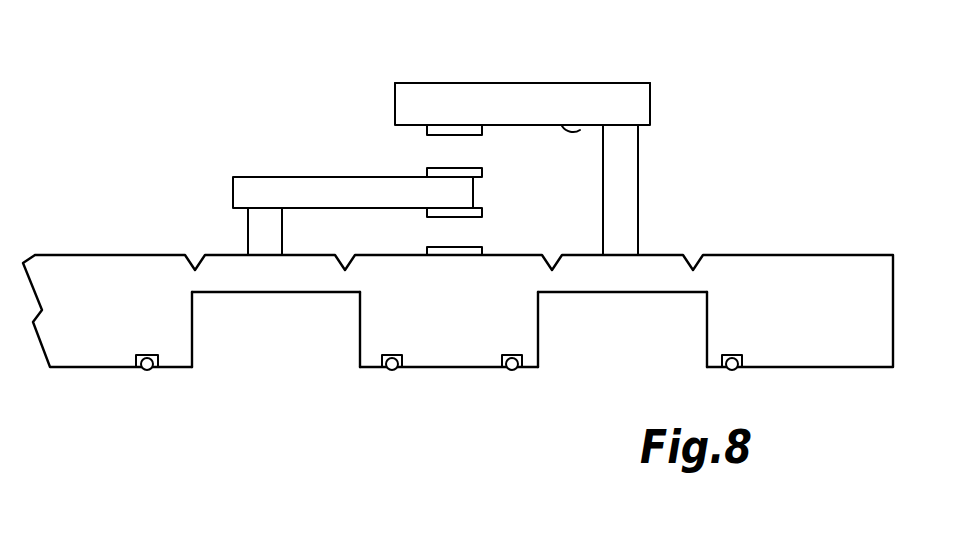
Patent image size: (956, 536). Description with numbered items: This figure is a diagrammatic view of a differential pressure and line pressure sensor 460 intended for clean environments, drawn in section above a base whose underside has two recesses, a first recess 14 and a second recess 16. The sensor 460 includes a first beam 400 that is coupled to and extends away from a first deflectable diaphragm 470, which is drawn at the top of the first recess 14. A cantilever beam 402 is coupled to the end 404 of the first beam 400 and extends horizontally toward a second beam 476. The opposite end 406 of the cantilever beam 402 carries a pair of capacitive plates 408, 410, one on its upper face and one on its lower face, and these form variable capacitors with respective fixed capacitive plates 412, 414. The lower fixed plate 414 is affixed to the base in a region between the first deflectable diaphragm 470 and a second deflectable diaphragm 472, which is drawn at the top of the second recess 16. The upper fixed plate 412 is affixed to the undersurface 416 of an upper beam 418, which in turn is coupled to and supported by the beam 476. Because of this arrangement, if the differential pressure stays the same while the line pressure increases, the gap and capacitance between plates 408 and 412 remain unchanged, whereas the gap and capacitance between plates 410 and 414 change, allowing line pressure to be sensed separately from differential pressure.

The first beam 400 is at (248, 247).
The cantilever beam 402 is at (377, 177).
The end of beam 404 is at (270, 208).
The opposite end of beam 406 is at (480, 195).
The capacitive plate 408 is at (482, 172).
The capacitive plate 410 is at (482, 214).
The capacitive plate 412 is at (482, 130).
The capacitive plate 414 is at (482, 253).
The undersurface 416 is at (558, 128).
The beam 418 is at (650, 108).
The sensor 460 is at (772, 117).
The first deflectable diaphragm 470 is at (305, 292).
The deflectable diaphragm 472 is at (687, 292).
The beam 476 is at (638, 218).
The first position P1 14 is at (285, 355).
The second position P2 16 is at (630, 359).